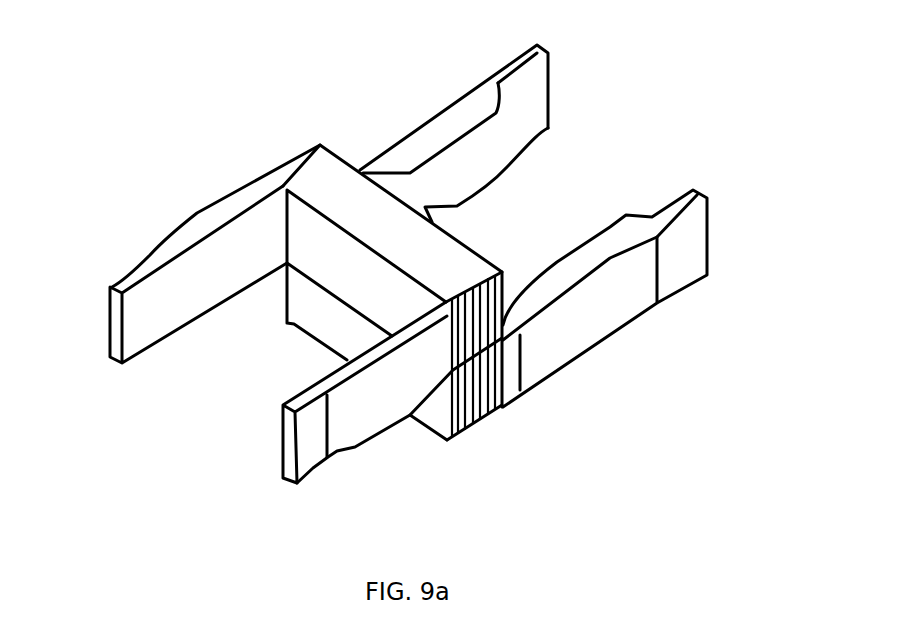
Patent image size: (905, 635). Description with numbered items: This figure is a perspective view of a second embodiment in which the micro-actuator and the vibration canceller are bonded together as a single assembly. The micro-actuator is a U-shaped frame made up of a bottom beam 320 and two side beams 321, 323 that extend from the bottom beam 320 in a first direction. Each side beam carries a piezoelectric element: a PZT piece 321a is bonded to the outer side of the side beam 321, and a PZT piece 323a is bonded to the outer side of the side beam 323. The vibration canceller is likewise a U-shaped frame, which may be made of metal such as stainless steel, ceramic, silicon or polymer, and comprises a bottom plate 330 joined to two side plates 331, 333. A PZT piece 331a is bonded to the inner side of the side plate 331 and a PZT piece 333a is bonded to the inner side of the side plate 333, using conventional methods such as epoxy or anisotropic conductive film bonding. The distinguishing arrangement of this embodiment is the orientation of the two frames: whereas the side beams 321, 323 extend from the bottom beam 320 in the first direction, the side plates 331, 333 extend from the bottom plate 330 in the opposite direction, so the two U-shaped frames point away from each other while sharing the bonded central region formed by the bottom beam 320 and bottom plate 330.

The bottom beam 320 is at (392, 230).
The bottom plate 330 is at (438, 420).
The side beam 321 is at (200, 275).
The PZT piece 321a is at (195, 213).
The side plate 331 is at (478, 84).
The PZT piece 331a is at (473, 158).
The side beam 323 is at (327, 380).
The PZT piece 323a is at (370, 410).
The side plate 333 is at (608, 287).
The PZT piece 333a is at (592, 263).